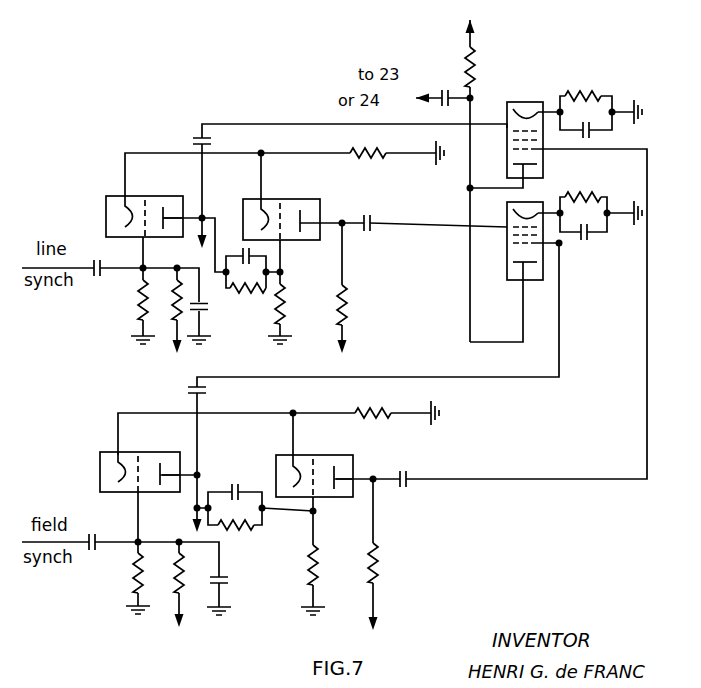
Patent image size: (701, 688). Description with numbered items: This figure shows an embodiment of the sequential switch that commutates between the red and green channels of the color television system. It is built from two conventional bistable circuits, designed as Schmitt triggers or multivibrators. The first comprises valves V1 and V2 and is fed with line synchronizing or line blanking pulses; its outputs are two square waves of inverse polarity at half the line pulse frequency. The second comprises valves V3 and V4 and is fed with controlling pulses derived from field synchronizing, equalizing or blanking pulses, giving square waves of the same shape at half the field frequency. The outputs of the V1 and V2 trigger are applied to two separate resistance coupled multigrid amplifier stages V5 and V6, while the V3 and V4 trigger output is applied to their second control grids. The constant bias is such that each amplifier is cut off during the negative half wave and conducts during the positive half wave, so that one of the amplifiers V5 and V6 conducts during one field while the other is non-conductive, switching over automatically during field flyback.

The valve V1 is at (144, 206).
The valve V2 is at (281, 209).
The valve V3 is at (140, 461).
The valve V4 is at (314, 467).
The resistance coupled amplifier stage V5 is at (516, 256).
The resistance coupled amplifier stage V6 is at (525, 128).